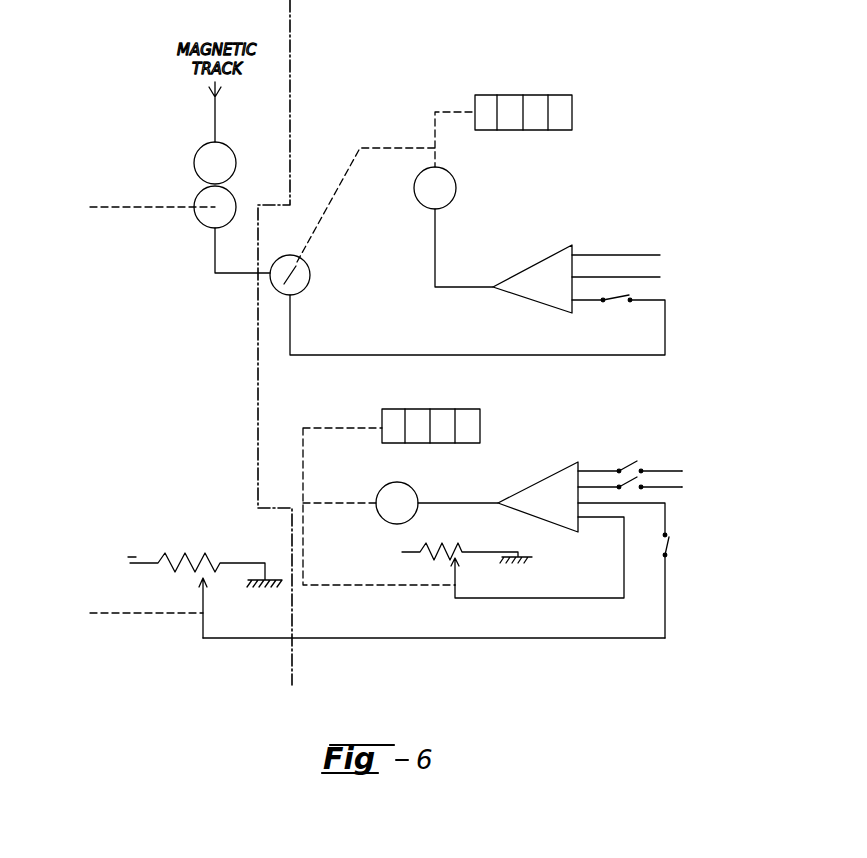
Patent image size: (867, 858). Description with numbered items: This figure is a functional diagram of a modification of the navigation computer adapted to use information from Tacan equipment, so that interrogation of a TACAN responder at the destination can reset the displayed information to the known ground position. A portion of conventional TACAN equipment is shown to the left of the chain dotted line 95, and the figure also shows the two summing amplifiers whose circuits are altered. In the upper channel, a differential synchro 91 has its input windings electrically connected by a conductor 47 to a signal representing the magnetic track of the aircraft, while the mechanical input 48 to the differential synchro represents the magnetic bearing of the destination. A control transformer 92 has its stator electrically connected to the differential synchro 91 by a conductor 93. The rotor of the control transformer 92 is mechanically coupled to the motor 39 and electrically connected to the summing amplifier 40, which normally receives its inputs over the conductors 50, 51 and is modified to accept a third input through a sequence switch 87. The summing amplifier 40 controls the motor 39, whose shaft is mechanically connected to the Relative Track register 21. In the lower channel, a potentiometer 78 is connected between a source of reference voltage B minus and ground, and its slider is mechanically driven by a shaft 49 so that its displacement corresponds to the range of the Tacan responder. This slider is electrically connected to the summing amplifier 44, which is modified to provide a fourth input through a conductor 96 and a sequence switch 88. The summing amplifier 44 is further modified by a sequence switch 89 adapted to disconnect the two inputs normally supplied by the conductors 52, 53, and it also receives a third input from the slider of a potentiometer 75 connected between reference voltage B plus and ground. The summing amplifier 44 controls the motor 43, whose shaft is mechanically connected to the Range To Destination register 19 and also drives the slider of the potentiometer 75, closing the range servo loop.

The conductor 47 is at (216, 113).
The differential synchro 91 is at (236, 163).
The mechanical input 48 is at (166, 205).
The control transformer 92 is at (274, 258).
The conductor 93 is at (244, 276).
The register 21 is at (556, 100).
The motor 39 is at (452, 180).
The summing amplifier 40 is at (553, 252).
The conductor 50 is at (660, 255).
The conductor 51 is at (660, 277).
The sequence switch 87 is at (618, 299).
The register 19 is at (472, 417).
The motor 43 is at (411, 488).
The summing amplifier 44 is at (558, 472).
The sequence switch 89 is at (628, 480).
The conductor 52 is at (682, 471).
The conductor 53 is at (682, 487).
The sequence switch 88 is at (668, 540).
The potentiometer 75 is at (476, 531).
The potentiometer 78 is at (221, 542).
The shaft 49 is at (196, 614).
The conductor 96 is at (358, 638).
The chain dotted line 95 is at (292, 672).